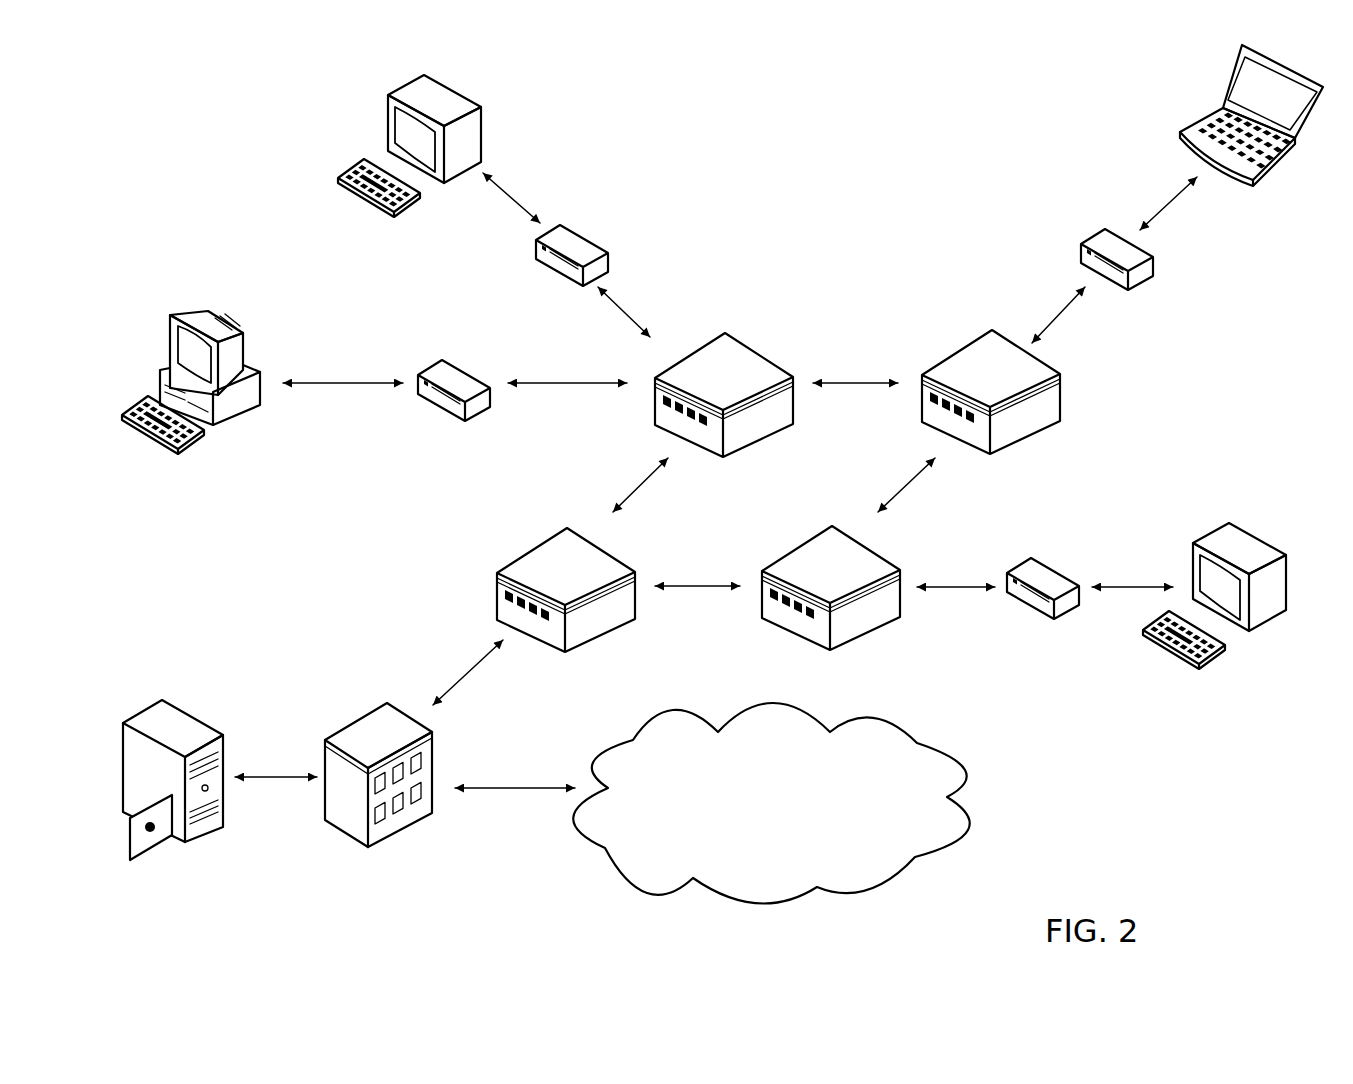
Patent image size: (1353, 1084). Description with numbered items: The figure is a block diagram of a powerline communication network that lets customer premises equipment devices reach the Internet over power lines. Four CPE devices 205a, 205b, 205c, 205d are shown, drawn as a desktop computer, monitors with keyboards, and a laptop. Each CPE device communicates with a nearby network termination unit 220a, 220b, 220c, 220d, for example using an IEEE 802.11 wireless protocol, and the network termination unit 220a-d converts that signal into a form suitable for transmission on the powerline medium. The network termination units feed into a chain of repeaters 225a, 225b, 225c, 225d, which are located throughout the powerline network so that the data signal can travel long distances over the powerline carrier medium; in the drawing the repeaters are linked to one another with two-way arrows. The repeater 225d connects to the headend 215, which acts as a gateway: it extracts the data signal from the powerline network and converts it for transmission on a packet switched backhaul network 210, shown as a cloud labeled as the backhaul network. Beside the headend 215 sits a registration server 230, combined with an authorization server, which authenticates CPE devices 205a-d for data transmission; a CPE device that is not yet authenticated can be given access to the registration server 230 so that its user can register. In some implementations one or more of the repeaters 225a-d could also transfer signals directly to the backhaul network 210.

The customer premises equipment (CPE) device 205a is at (223, 323).
The customer premises equipment (CPE) device 205b is at (472, 102).
The customer premises equipment (CPE) device 205c is at (1208, 112).
The customer premises equipment (CPE) device 205d is at (1243, 528).
The network termination unit (NTU) 220a is at (453, 363).
The network termination unit (NTU) 220b is at (582, 235).
The network termination unit (NTU) 220c is at (1142, 283).
The network termination unit (NTU) 220d is at (1043, 565).
The repeater 225a is at (750, 345).
The repeater 225b is at (962, 345).
The repeater 225c is at (873, 545).
The repeater 225d is at (612, 550).
The headend 215 is at (365, 715).
The registration server 230 is at (178, 705).
The backhaul network 210 is at (920, 743).